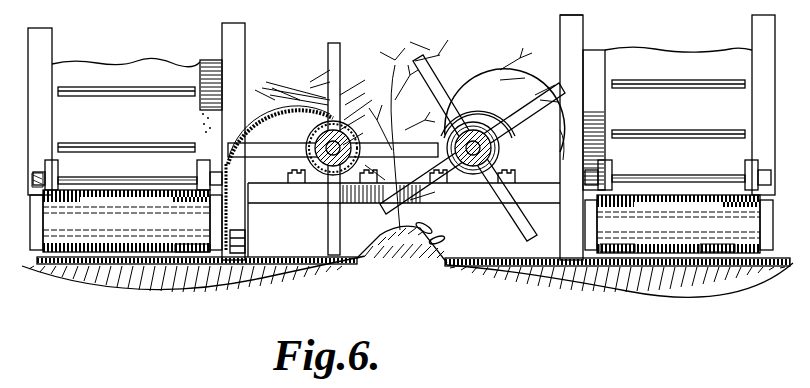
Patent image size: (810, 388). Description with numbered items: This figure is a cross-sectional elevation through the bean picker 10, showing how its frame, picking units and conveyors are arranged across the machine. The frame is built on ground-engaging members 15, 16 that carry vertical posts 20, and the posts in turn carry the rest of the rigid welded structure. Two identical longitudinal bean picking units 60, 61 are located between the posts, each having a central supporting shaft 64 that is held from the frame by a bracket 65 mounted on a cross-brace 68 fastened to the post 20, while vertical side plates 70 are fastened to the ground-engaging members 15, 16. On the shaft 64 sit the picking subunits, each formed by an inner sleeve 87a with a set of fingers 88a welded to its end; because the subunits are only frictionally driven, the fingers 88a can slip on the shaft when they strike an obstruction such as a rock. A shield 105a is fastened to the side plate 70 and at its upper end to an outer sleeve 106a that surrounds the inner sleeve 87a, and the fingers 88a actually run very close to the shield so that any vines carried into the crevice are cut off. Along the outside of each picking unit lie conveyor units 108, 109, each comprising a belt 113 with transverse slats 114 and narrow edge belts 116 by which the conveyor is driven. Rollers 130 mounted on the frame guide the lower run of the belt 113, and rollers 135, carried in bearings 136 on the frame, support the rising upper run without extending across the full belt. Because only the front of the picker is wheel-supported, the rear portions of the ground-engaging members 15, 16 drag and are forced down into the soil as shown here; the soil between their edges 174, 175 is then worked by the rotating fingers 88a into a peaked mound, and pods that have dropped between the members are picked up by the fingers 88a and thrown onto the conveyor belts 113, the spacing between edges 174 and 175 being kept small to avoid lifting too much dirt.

The bean picker 10 is at (600, 31).
The ground-engaging member 15 is at (690, 265).
The ground-engaging member 16 is at (150, 262).
The vertical post 20 is at (238, 52).
The longitudinal bean picking unit 60 is at (497, 110).
The longitudinal bean picking unit 61 is at (270, 110).
The central supporting shaft 64 is at (336, 146).
The bracket 65 is at (308, 178).
The cross-brace 68 is at (275, 196).
The vertical side plate 70 is at (243, 235).
The sleeve 87a is at (477, 168).
The fingers 88a is at (335, 213).
The shield 105a is at (566, 140).
The outer sleeve 106a is at (310, 123).
The conveyor unit 108 is at (713, 253).
The conveyor unit 109 is at (120, 247).
The belt 113 is at (87, 68).
The slats 114 is at (132, 87).
The narrow belt 116 is at (188, 252).
The roller 130 is at (90, 230).
The roller 135 is at (55, 165).
The bearing 136 is at (44, 176).
The edge 174 is at (447, 265).
The edge 175 is at (358, 260).